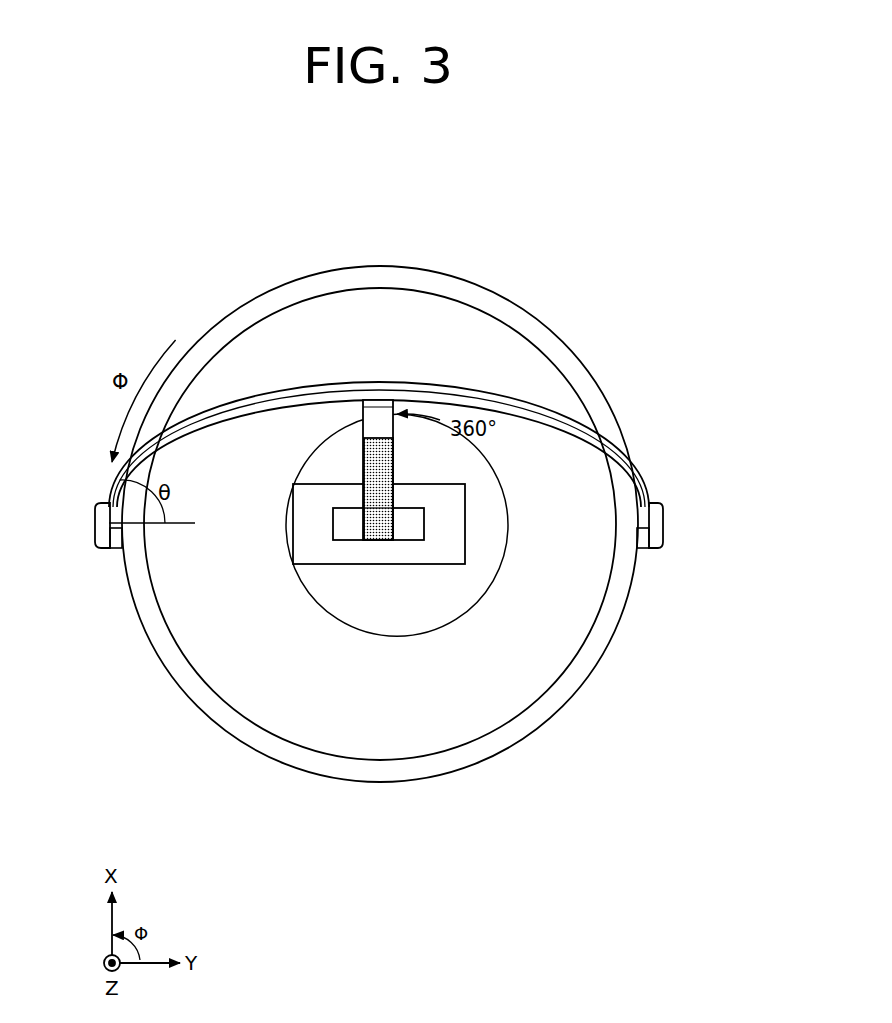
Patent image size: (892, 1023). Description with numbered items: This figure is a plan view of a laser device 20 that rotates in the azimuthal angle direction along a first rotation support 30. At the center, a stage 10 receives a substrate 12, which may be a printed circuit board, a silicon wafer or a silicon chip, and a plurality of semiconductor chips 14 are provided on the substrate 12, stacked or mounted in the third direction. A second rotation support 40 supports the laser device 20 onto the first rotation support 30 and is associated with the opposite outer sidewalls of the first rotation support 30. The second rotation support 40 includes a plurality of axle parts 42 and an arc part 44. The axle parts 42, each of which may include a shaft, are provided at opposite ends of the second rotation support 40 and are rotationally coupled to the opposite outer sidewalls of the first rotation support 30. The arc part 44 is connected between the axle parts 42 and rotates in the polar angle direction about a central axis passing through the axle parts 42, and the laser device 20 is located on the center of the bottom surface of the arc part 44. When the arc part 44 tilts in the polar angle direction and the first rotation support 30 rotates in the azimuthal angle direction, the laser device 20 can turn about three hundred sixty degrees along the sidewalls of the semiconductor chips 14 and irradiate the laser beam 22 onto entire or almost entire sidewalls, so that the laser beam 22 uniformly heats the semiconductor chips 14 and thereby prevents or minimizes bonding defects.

The stage 10 is at (453, 550).
The substrate 12 is at (415, 520).
The semiconductor chips 14 is at (378, 540).
The laser device 20 is at (380, 420).
The laser beam 22 is at (383, 460).
The first rotation support 30 is at (603, 627).
The second rotation support 40 is at (436, 465).
The axle parts 42 is at (662, 522).
The arc part 44 is at (640, 487).